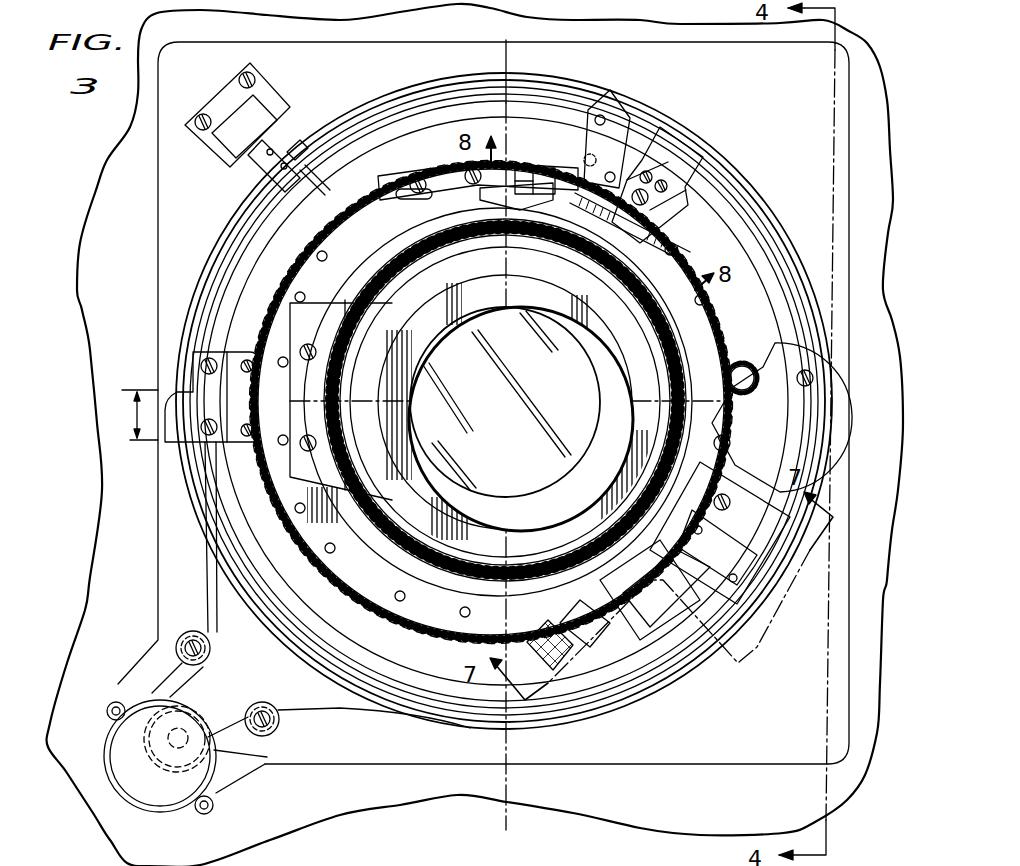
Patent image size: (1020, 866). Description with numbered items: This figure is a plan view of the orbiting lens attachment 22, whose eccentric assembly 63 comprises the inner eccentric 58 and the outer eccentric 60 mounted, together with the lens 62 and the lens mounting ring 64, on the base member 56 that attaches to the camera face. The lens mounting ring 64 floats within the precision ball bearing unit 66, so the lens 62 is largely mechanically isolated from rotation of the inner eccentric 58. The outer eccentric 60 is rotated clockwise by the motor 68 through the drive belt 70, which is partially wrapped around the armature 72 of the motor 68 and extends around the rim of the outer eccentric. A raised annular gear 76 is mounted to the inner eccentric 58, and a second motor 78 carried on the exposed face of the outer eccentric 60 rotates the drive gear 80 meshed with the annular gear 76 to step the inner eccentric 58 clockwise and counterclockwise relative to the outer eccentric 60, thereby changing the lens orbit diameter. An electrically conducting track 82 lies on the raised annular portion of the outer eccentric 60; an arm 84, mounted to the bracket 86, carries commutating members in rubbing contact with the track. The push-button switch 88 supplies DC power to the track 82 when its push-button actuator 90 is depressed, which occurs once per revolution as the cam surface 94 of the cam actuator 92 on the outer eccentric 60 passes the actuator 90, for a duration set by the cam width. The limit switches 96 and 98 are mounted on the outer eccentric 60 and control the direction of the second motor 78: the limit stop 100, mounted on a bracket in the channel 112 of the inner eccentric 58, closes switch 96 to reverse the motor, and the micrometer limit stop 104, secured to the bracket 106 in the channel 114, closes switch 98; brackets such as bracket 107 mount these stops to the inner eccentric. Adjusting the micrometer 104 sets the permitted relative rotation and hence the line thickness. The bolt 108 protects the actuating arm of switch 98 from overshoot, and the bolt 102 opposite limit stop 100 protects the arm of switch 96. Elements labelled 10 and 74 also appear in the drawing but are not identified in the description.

The orbiting lens attachment 22 is at (905, 65).
The eccentric assembly 63 is at (782, 196).
The outer eccentric ring member 60 is at (385, 150).
The inner eccentric ring member 58 is at (292, 290).
The base member 56 is at (378, 64).
The drive belt 70 is at (340, 712).
The motor 68 is at (107, 778).
The armature 72 is at (190, 632).
The boss 74 is at (280, 727).
The cam actuator 92 is at (182, 436).
The cam surface 94 is at (167, 433).
The precision ball bearing unit 66 is at (388, 282).
The raised annular gear 76 is at (372, 608).
The lens mounting ring 64 is at (524, 266).
The limit stop 104 is at (600, 540).
The lens 62 is at (574, 389).
The channel 112 is at (450, 175).
The bracket 107 is at (520, 212).
The limit stop 100 is at (560, 175).
The limit switch 96 is at (615, 120).
The limit switch 98 is at (690, 140).
The bolt 102 is at (600, 245).
The drive gear 80 is at (742, 362).
The second motor 78 is at (855, 428).
The bolt 108 is at (692, 547).
The bracket 106 is at (643, 590).
The channel 114 is at (530, 615).
The assembly 10 is at (690, 478).
The push-button switch 88 is at (240, 115).
The electrically conducting track 82 is at (232, 168).
The arm 84 is at (268, 182).
The push-button actuator 90 is at (300, 130).
The bracket 86 is at (310, 140).